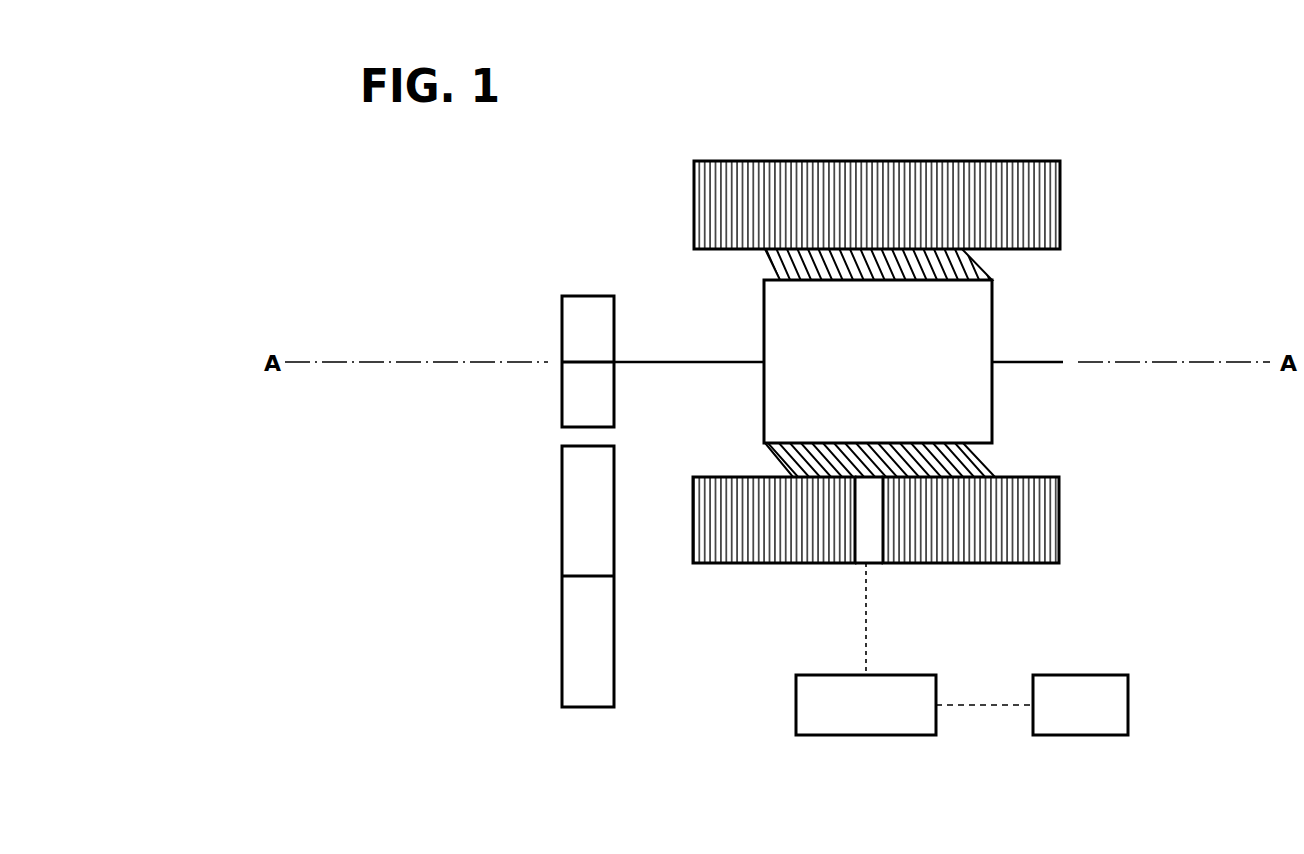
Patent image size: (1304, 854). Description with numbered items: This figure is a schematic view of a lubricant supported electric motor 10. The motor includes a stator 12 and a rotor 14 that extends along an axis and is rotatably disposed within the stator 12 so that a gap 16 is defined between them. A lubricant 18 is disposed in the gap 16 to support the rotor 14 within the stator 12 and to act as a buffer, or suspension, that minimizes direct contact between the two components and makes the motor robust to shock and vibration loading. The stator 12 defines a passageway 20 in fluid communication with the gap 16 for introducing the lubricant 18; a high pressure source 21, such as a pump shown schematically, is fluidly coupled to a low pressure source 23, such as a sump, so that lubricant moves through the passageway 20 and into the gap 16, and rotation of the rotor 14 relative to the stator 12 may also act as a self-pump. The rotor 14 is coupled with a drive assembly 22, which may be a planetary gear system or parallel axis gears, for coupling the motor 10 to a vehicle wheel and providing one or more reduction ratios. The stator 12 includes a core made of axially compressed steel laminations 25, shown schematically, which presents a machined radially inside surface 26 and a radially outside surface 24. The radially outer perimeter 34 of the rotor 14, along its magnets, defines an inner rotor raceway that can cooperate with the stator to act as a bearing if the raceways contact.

The lubricant supported electric motor 10 is at (1194, 80).
The stator 12 is at (1037, 161).
The rotor 14 is at (993, 312).
The gap 16 is at (1007, 457).
The lubricant 18 is at (976, 262).
The passageway 20 is at (857, 545).
The high pressure source 21 is at (914, 705).
The drive assembly 22 is at (562, 562).
The low pressure source 23 is at (1080, 705).
The radially outside surface 24 is at (762, 565).
The laminations 25 is at (1030, 520).
The radially inside surface 26 is at (715, 476).
The radially outer perimeter 34 is at (773, 275).